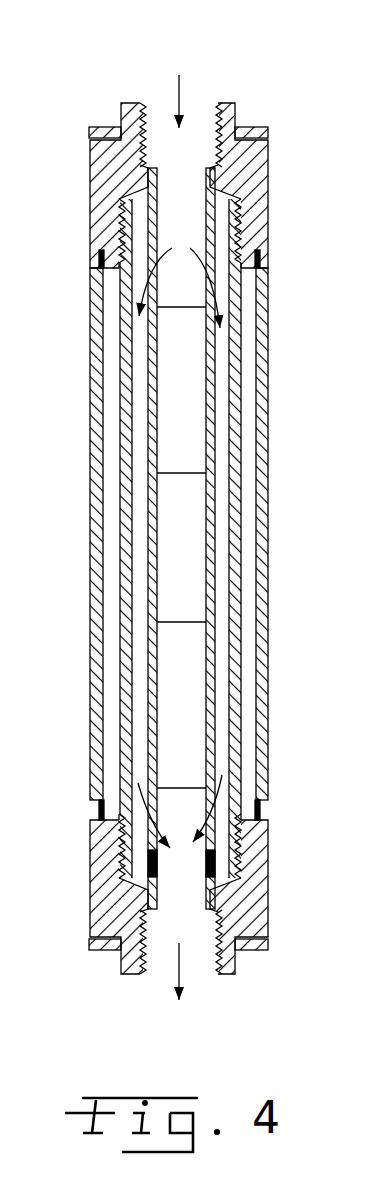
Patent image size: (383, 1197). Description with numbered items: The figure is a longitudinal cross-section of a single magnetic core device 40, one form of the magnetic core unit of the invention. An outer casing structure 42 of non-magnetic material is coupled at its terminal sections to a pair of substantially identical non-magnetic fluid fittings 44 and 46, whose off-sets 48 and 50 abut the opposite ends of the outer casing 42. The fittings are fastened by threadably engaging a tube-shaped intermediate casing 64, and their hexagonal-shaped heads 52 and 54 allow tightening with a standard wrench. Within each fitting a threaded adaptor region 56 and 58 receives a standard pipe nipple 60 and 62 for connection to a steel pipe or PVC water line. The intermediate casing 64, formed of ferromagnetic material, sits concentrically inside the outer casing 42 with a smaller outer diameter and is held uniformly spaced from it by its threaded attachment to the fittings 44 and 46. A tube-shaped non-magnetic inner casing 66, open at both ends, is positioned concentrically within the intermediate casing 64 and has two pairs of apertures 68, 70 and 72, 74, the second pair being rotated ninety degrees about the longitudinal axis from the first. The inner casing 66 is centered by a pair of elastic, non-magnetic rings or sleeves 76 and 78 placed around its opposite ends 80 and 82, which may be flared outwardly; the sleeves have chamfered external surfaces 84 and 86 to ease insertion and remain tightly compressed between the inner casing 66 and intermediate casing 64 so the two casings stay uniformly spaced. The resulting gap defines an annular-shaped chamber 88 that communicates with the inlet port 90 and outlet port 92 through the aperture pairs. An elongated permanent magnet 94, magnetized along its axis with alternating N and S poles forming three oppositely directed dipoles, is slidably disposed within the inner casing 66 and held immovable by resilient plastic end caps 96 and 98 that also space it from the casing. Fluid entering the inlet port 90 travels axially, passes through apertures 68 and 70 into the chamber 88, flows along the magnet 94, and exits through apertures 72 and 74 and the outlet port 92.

The magnetic core device 40 is at (267, 89).
The outer casing structure 42 is at (93, 378).
The fluid fitting 44 is at (264, 146).
The fluid fitting 46 is at (256, 920).
The off-set 48 is at (262, 262).
The off-set 50 is at (262, 808).
The hexagonal-shaped head 52 is at (112, 127).
The hexagonal-shaped head 54 is at (118, 951).
The adaptor region 56 is at (147, 102).
The adaptor region 58 is at (234, 955).
The pipe nipple 60 is at (161, 112).
The pipe nipple 62 is at (198, 962).
The intermediate casing structure 64 is at (236, 410).
The inner casing structure 66 is at (214, 368).
The aperture 68 is at (100, 262).
The aperture 70 is at (242, 288).
The aperture 72 is at (150, 833).
The aperture 74 is at (256, 813).
The sleeve 76 is at (132, 222).
The sleeve 78 is at (140, 855).
The end of inner casing 80 is at (150, 195).
The end of inner casing 82 is at (130, 864).
The chamfered external surface 84 is at (140, 200).
The chamfered external surface 86 is at (143, 882).
The annular-shaped chamber 88 is at (142, 497).
The inlet port 90 is at (201, 96).
The outlet port 92 is at (160, 980).
The permanent magnet 94 is at (205, 670).
The end cap 96 is at (168, 322).
The end cap 98 is at (155, 770).